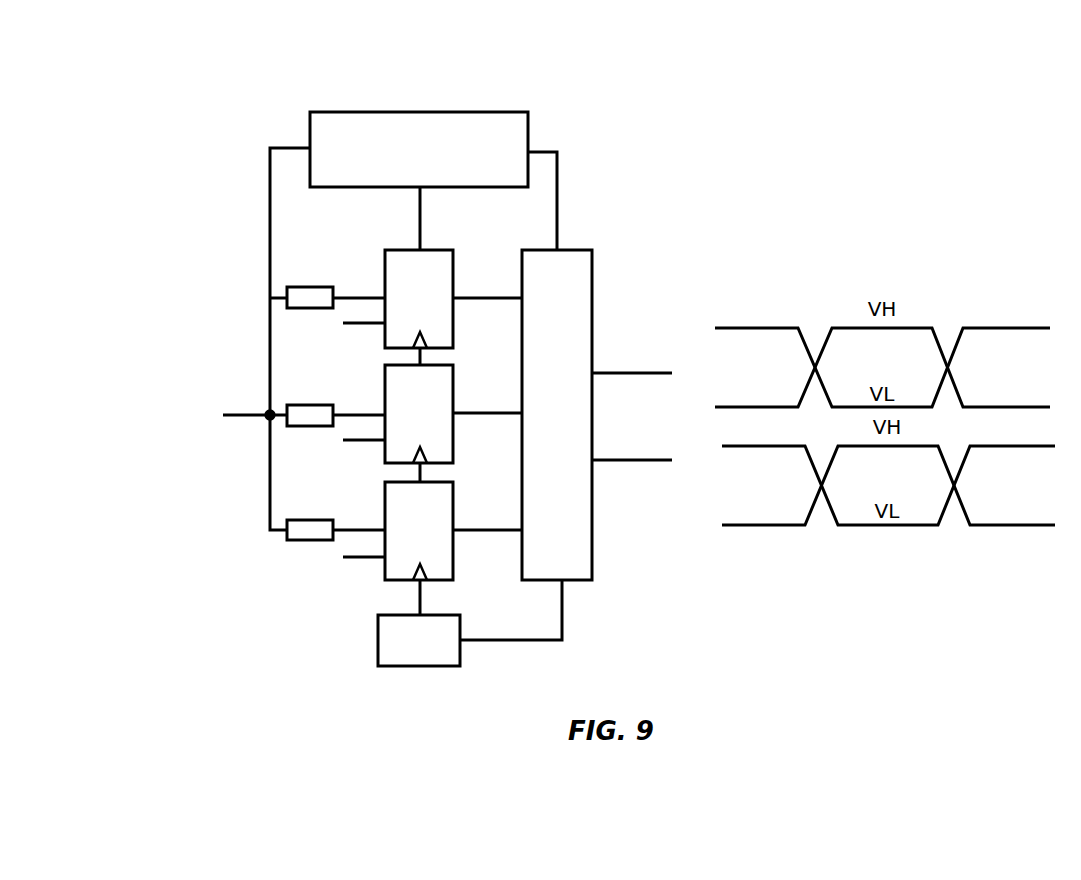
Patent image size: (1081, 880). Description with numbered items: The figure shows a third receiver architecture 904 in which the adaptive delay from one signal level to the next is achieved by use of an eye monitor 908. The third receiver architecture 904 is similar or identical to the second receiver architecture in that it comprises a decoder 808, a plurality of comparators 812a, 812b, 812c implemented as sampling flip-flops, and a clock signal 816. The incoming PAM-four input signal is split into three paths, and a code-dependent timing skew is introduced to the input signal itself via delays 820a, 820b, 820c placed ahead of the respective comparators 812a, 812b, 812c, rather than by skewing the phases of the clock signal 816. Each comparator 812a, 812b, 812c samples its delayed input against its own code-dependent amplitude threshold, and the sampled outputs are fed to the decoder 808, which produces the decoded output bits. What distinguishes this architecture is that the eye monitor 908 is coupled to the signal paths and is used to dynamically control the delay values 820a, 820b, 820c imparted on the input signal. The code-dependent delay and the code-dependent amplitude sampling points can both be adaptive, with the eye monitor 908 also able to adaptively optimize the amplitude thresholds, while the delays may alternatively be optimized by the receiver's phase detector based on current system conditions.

The third receiver architecture 904 is at (233, 104).
The eye monitor 908 is at (482, 112).
The decoder 808 is at (577, 250).
The comparator 812a is at (403, 250).
The comparator 812b is at (385, 463).
The comparator 812c is at (385, 572).
The delay 820a is at (287, 290).
The delay 820b is at (287, 425).
The delay 820c is at (287, 540).
The clock signal 816 is at (408, 666).